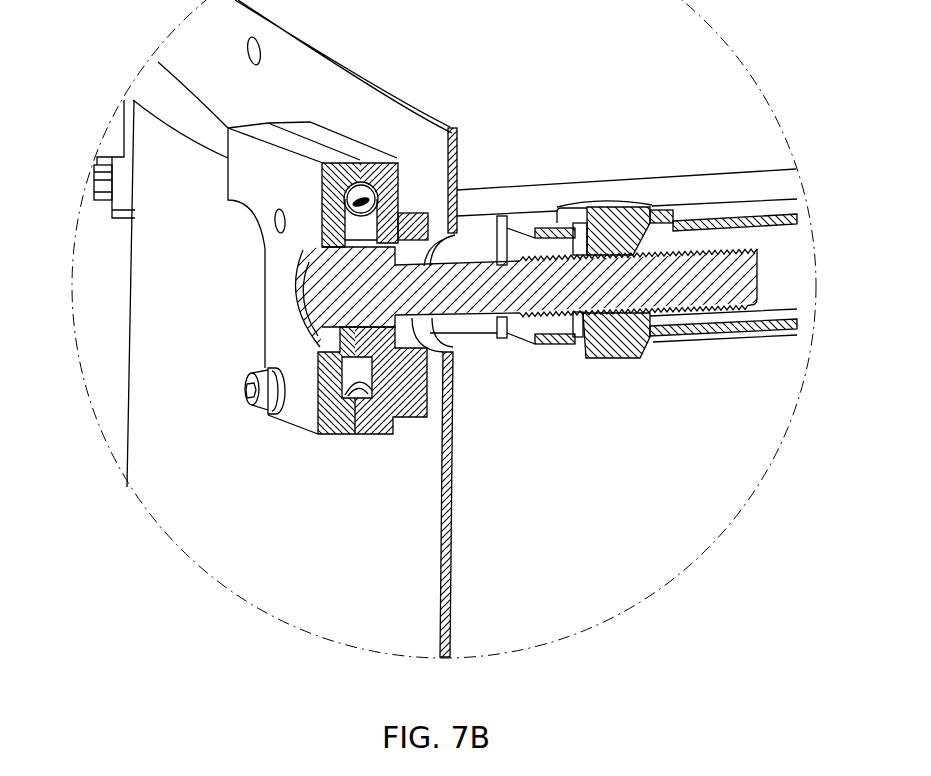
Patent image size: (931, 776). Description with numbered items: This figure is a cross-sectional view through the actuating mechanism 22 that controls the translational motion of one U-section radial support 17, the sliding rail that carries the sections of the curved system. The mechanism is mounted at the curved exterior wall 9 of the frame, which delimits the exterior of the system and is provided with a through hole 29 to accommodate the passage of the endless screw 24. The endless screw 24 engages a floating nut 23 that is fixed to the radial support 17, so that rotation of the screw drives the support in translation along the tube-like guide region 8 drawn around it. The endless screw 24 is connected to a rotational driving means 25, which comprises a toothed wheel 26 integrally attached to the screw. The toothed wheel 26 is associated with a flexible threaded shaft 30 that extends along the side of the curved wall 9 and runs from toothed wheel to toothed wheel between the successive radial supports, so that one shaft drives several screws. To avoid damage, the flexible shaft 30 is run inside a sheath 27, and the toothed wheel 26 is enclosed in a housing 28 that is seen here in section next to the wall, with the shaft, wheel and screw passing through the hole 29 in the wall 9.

The outer tube 8 is at (724, 185).
The curved exterior wall 9 is at (341, 555).
The radial support 17 is at (706, 338).
The actuating mechanism 22 is at (253, 252).
The floating nut 23 is at (659, 208).
The endless screw 24 is at (521, 302).
The rotational driving means 25 is at (298, 327).
The toothed wheel 26 is at (368, 232).
The sheath 27 is at (163, 98).
The housing 28 is at (257, 182).
The through hole 29 is at (455, 346).
The flexible threaded shaft 30 is at (368, 186).